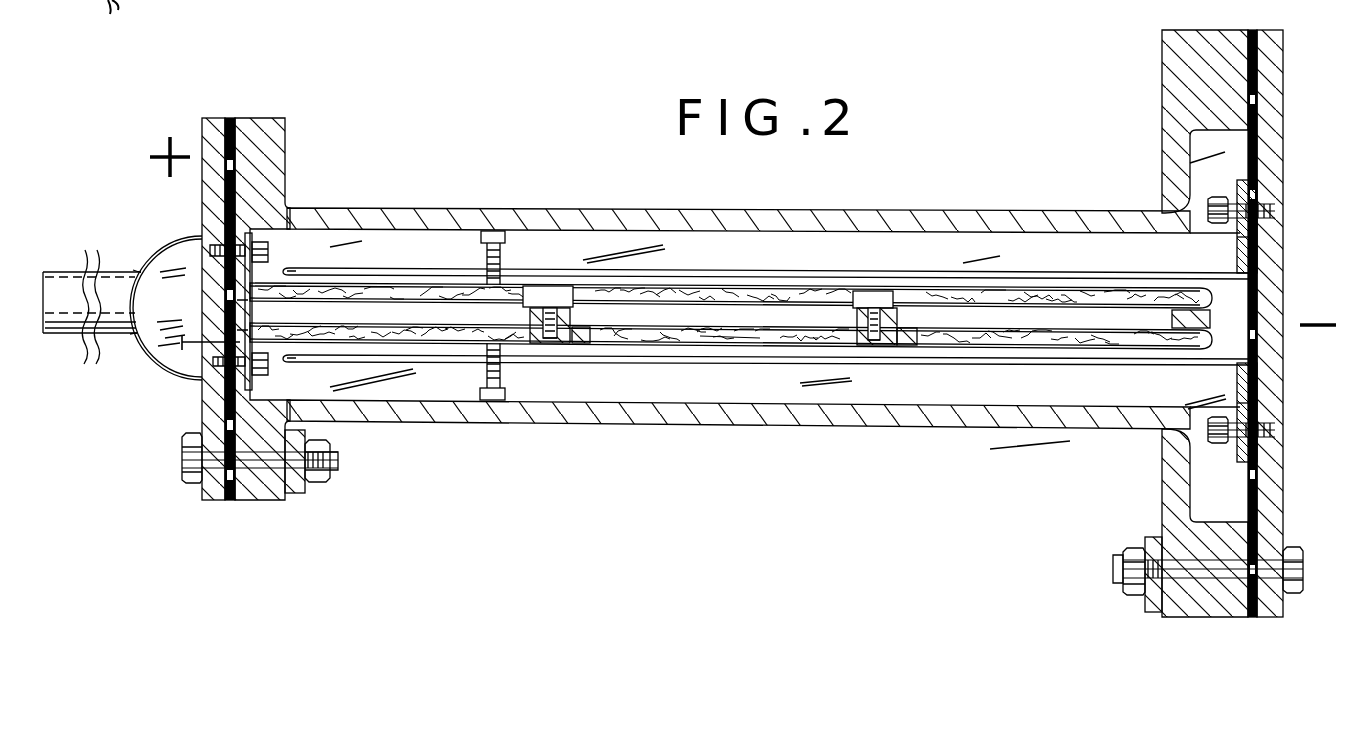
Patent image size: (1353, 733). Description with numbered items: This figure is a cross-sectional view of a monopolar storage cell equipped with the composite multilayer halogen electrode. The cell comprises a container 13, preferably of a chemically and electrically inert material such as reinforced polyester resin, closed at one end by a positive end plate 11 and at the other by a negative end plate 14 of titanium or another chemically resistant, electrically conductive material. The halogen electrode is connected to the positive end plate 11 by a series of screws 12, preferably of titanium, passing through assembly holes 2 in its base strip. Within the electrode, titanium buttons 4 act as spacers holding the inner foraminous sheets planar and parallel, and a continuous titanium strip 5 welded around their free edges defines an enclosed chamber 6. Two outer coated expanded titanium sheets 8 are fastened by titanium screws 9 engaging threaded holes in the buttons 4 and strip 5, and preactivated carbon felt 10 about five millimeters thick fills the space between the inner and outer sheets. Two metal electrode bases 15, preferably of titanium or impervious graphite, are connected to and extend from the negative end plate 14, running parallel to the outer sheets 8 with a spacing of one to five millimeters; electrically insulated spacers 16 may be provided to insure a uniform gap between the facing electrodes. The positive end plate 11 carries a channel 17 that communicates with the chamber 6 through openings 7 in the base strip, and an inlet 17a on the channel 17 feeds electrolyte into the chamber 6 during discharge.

The assembly holes 2 is at (242, 250).
The titanium buttons 4 is at (578, 314).
The continuous titanium strip 5 is at (1210, 318).
The chamber 6 is at (741, 313).
The openings 7 is at (215, 312).
The expanded titanium sheets 8 is at (365, 286).
The titanium screws 9 is at (548, 340).
The preactivated carbon felt 10 is at (458, 290).
The positive end plate 11 is at (218, 140).
The screws 12 is at (290, 246).
The container 13 is at (657, 425).
The negative end plate 14 is at (1275, 132).
The metal electrode bases 15 is at (912, 272).
The electrically insulated spacers 16 is at (496, 258).
The channel 17 is at (176, 265).
The inlet 17a is at (79, 272).